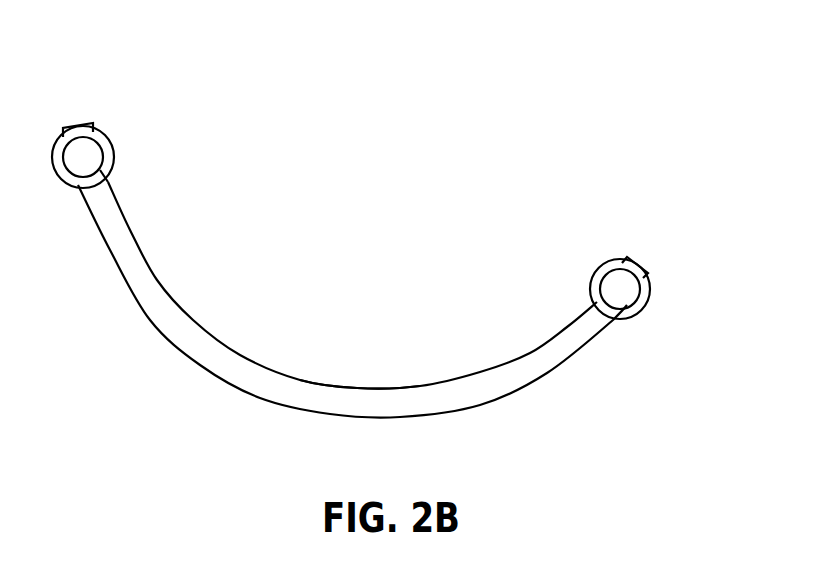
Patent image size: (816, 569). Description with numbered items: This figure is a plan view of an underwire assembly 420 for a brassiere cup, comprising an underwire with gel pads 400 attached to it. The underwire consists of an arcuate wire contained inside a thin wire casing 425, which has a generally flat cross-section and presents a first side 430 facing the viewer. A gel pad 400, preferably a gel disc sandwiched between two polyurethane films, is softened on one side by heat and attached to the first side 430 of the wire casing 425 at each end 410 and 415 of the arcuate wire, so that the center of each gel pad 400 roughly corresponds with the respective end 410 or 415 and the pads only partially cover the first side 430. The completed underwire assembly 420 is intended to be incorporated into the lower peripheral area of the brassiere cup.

The gel pad 400 is at (92, 153).
The end of the arcuate wire 410 is at (80, 125).
The end of the arcuate wire 415 is at (632, 256).
The underwire assembly 420 is at (551, 158).
The wire casing 425 is at (487, 390).
The first side 430 is at (332, 398).